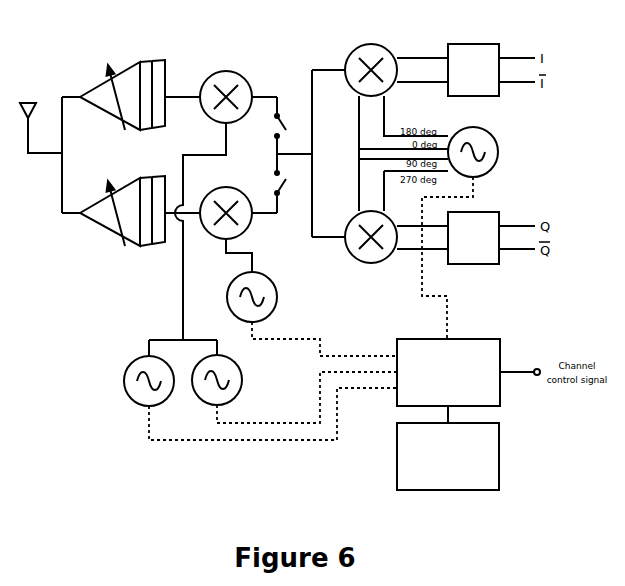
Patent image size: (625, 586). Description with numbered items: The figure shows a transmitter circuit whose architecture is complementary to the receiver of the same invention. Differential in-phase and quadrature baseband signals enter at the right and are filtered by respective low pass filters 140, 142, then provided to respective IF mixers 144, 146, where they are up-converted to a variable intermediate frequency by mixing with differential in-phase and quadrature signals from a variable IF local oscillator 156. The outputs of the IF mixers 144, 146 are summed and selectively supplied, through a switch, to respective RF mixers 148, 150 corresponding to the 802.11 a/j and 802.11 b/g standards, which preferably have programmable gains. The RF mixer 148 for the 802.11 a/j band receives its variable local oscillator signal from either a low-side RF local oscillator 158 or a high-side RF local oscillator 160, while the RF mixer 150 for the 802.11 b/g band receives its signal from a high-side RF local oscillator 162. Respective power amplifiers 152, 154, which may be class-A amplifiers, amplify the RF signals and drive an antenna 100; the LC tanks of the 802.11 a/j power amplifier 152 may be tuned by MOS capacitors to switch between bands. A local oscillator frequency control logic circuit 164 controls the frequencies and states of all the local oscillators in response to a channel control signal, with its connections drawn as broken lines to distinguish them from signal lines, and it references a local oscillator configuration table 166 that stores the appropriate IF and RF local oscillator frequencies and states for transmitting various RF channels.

The antenna 100 is at (28, 100).
The low pass filter 140 is at (483, 44).
The low pass filter 142 is at (487, 264).
The IF mixer 144 is at (371, 44).
The IF mixer 146 is at (371, 263).
The RF mixer 148 is at (226, 70).
The RF mixer 150 is at (248, 226).
The power amplifier 152 is at (140, 62).
The power amplifier 154 is at (98, 223).
The variable IF local oscillator 156 is at (497, 140).
The low-side RF local oscillator 158 is at (133, 400).
The high-side RF local oscillator 160 is at (200, 399).
The high-side RF local oscillator 162 is at (227, 301).
The local oscillator frequency control logic circuit 164 is at (500, 390).
The local oscillator configuration table 166 is at (500, 474).